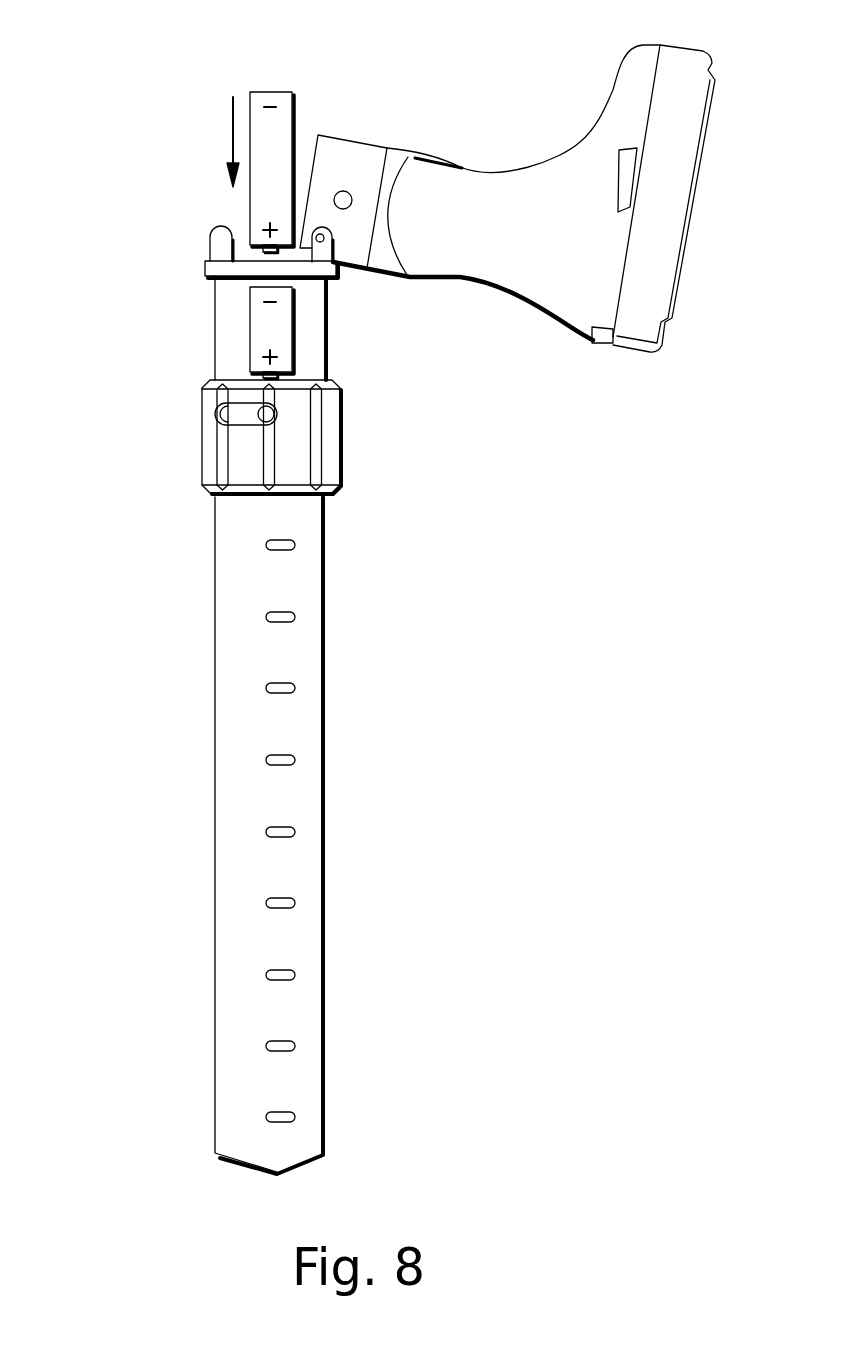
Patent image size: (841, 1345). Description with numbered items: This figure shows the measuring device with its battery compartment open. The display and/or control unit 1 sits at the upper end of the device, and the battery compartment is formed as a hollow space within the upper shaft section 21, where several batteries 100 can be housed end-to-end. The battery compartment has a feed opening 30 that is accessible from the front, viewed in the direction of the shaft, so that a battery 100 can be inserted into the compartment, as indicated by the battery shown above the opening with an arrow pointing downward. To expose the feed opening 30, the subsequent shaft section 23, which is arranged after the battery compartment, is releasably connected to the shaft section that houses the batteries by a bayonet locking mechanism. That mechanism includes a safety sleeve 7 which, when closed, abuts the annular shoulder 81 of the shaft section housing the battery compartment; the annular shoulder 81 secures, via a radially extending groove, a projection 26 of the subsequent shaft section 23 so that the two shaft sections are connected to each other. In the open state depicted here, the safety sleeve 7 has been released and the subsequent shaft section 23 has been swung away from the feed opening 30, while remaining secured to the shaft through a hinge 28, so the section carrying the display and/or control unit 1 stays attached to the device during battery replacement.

The display and/or control unit 1 is at (567, 302).
The safety sleeve 7 is at (302, 437).
The upper shaft section 21 is at (310, 727).
The subsequent shaft section 23 is at (327, 140).
The projection 26 is at (343, 191).
The hinge 28 is at (327, 241).
The feed opening 30 is at (207, 211).
The annular shoulder 81 is at (223, 292).
The battery 100 is at (276, 96).